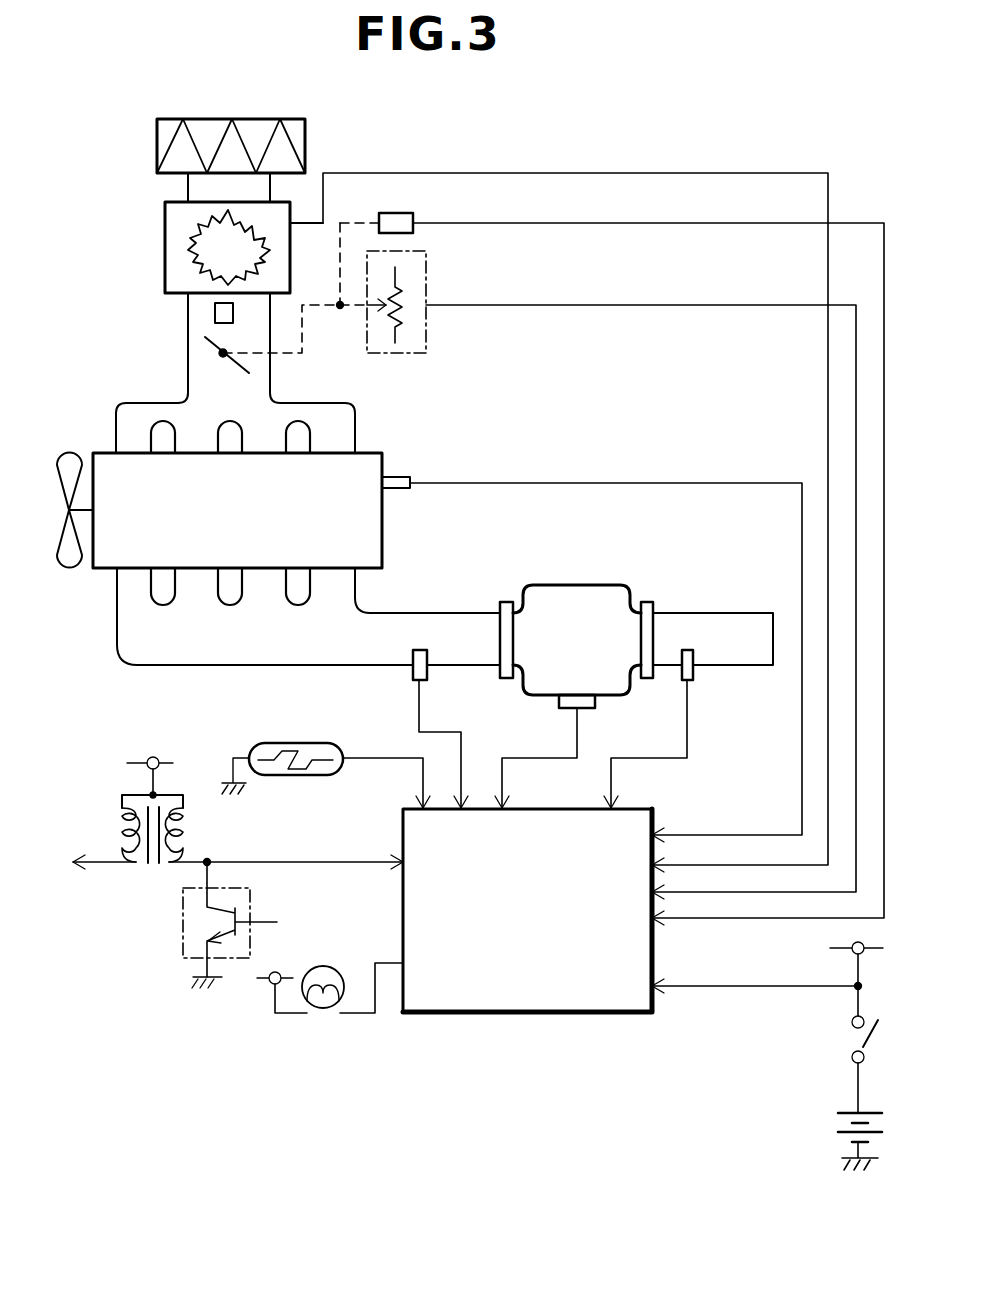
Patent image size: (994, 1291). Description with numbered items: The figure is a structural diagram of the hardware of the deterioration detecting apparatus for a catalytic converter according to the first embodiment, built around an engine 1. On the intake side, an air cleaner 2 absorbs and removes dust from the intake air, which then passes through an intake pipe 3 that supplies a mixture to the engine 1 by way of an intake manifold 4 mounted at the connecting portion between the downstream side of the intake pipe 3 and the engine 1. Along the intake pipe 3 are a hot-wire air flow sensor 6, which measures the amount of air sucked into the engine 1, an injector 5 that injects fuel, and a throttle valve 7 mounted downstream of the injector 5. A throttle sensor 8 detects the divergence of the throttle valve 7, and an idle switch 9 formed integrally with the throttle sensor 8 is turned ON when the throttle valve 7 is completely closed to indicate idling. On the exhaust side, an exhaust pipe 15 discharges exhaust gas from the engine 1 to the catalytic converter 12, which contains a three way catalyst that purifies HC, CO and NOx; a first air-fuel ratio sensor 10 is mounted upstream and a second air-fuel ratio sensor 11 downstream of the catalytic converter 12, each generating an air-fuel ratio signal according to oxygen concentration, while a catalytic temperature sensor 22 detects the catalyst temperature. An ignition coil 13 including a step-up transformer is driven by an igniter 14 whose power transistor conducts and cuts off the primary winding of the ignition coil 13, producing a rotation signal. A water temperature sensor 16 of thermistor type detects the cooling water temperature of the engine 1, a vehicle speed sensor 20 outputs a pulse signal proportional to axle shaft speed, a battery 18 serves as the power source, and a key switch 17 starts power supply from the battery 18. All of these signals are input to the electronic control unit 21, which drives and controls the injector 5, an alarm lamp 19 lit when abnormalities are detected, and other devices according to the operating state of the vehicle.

The engine 1 is at (382, 542).
The air cleaner 2 is at (305, 135).
The intake pipe 3 is at (188, 189).
The intake manifold 4 is at (116, 416).
The injector 5 is at (215, 315).
The hot-wire air flow sensor 6 is at (165, 249).
The throttle valve 7 is at (210, 355).
The throttle sensor 8 is at (426, 266).
The idle switch 9 is at (398, 213).
The first air-fuel ratio sensor 10 is at (427, 672).
The second air-fuel ratio sensor 11 is at (693, 672).
The catalytic converter 12 is at (568, 585).
The ignition coil 13 is at (122, 795).
The igniter 14 is at (183, 928).
The exhaust pipe 15 is at (143, 665).
The water temperature sensor 16 is at (395, 476).
The key switch 17 is at (851, 1045).
The battery 18 is at (838, 1128).
The alarm lamp 19 is at (324, 965).
The vehicle speed sensor 20 is at (290, 745).
The electronic control unit 21 is at (626, 1013).
The catalytic temperature sensor 22 is at (595, 705).